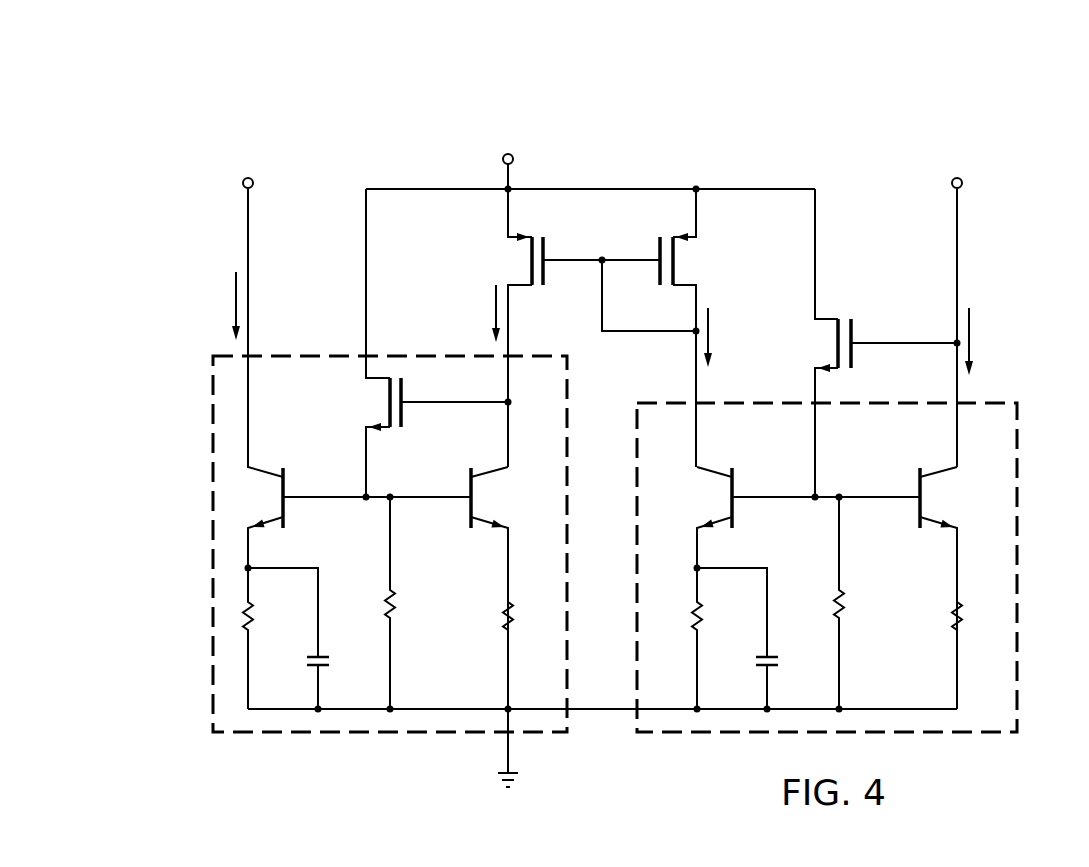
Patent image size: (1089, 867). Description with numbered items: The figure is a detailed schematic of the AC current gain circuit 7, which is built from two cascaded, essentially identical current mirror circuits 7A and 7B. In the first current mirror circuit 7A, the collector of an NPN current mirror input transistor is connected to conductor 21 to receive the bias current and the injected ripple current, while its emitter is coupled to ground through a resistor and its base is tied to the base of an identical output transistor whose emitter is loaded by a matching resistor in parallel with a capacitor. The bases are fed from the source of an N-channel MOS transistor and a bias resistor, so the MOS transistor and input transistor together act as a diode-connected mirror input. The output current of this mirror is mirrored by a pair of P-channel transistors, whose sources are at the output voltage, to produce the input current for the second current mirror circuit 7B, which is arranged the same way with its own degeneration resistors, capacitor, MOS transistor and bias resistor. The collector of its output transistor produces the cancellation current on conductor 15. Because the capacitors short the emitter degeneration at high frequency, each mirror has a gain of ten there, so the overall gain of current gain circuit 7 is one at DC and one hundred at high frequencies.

The AC current gain circuit 7 is at (342, 96).
The current mirror circuit 7A is at (1020, 667).
The current mirror circuit 7B is at (211, 673).
The conductor 15 is at (243, 178).
The conductor 21 is at (962, 178).